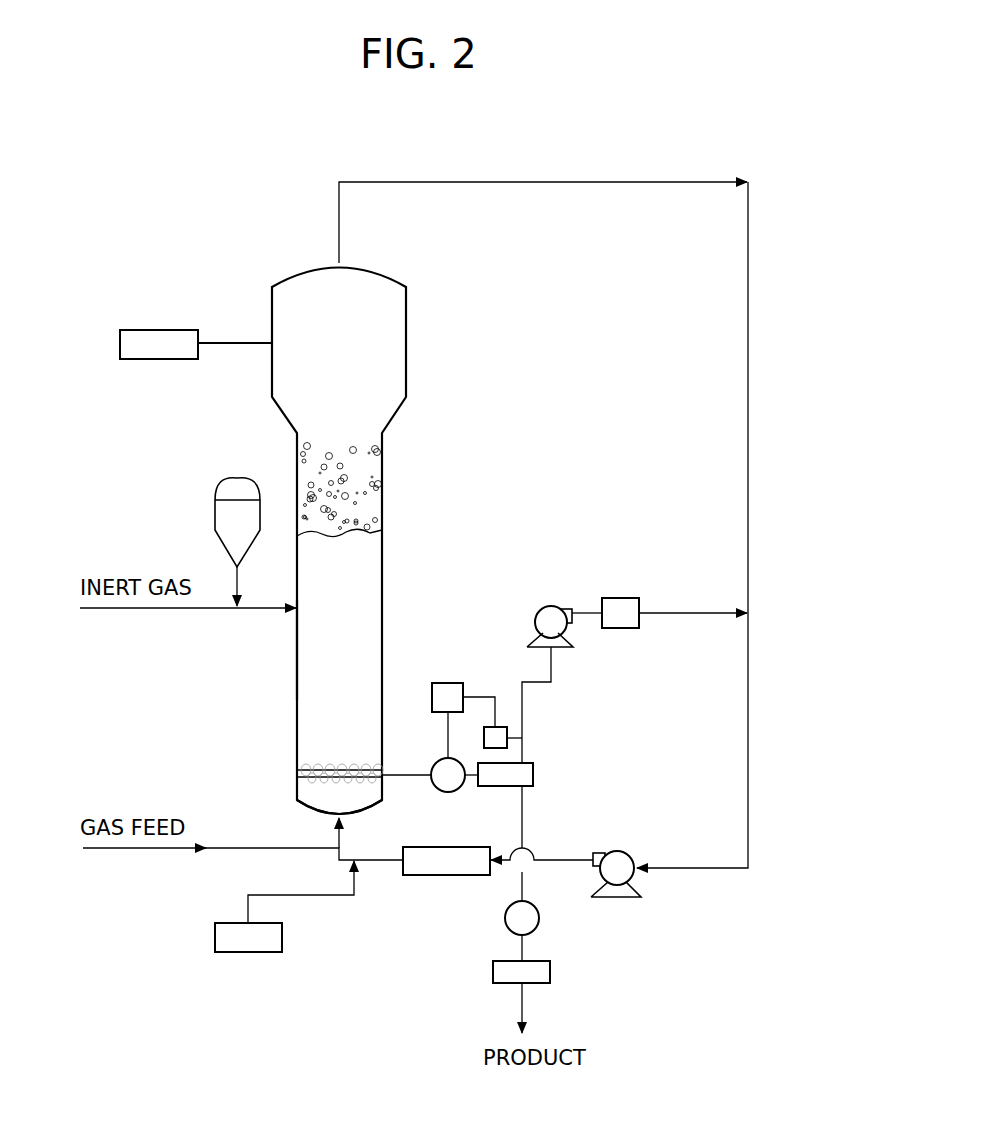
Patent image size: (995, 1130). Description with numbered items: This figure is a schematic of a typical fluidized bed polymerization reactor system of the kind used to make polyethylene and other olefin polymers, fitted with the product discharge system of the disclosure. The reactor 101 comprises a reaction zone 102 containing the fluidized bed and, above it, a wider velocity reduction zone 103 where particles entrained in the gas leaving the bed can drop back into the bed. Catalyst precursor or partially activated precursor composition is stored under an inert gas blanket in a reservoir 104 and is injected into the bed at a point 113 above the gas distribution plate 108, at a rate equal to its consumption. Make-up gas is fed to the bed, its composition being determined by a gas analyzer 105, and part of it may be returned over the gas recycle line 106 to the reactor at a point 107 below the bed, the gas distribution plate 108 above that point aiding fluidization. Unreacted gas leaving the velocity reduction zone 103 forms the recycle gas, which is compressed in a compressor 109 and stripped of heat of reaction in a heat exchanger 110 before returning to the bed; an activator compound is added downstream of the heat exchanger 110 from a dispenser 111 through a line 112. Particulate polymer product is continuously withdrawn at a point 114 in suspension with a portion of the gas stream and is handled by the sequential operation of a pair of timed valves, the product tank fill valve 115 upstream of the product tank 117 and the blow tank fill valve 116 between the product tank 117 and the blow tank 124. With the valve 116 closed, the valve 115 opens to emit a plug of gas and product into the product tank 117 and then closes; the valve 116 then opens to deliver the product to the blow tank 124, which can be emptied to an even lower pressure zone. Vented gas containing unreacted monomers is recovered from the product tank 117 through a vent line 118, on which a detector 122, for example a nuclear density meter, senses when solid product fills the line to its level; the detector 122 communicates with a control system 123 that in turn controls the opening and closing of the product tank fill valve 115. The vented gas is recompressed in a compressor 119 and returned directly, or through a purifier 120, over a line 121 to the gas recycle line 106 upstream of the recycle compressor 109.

The reactor 101 is at (382, 545).
The reaction zone 102 is at (366, 606).
The velocity reduction zone 103 is at (406, 370).
The reservoir 104 is at (215, 518).
The gas analyzer 105 is at (160, 359).
The gas recycle line 106 is at (748, 375).
The point below the bed 107 is at (318, 812).
The gas distribution plate 108 is at (334, 768).
The compressor 109 is at (628, 854).
The heat exchanger 110 is at (456, 875).
The dispenser 111 is at (262, 952).
The line 112 is at (322, 895).
The point 113 is at (297, 638).
The point 114 is at (400, 768).
The product tank fill valve 115 is at (448, 792).
The blow tank fill valve 116 is at (539, 918).
The product tank 117 is at (533, 779).
The vent line 118 is at (523, 702).
The compressor 119 is at (539, 610).
The purifier 120 is at (622, 597).
The line 121 is at (663, 614).
The detector 122 is at (495, 750).
The control system 123 is at (452, 682).
The blow tank 124 is at (550, 975).